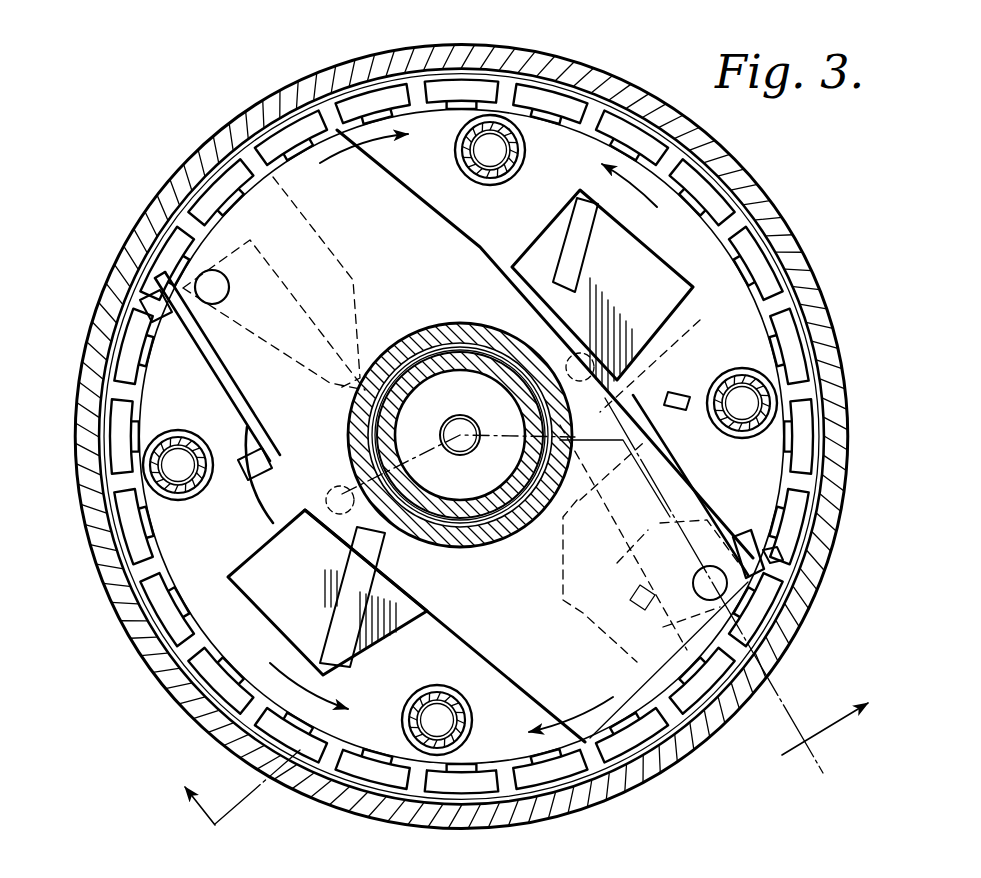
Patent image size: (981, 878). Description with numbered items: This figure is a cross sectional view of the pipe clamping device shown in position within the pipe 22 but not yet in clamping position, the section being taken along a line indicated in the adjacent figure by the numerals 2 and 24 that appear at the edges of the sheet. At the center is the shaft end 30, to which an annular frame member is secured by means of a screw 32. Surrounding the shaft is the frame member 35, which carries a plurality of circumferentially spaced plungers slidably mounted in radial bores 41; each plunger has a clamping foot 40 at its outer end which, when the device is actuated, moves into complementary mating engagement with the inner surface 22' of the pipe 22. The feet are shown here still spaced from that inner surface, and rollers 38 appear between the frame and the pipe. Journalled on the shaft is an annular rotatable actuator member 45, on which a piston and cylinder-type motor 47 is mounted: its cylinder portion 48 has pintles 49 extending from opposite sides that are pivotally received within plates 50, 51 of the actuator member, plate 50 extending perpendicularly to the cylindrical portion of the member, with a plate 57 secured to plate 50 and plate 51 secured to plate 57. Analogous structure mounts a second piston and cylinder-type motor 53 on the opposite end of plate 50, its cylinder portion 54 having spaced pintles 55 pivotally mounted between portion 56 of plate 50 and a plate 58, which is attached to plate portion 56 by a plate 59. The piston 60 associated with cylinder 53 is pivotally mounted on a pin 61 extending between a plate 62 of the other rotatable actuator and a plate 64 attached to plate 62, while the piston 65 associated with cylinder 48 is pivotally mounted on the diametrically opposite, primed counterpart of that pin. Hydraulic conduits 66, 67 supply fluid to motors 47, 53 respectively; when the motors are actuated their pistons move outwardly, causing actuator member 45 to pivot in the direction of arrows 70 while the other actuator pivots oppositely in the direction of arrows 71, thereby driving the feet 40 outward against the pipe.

The section line 2- 2 is at (516, 621).
The pipe 22 is at (461, 436).
The inner surface of pipe 22' is at (425, 437).
The housing part 24 is at (323, 7).
The shaft end 30 is at (492, 395).
The screw 32 is at (467, 444).
The frame member 35 is at (600, 128).
The roller bearing 38 is at (500, 116).
The clamping foot 40 is at (143, 534).
The radial bore 41 is at (232, 7).
The annular rotatable actuator member 45 is at (452, 325).
The piston and cylinder-type motor 47 is at (683, 460).
The cylinder portion 48 is at (795, 508).
The pintle 49 is at (735, 590).
The plate 50 is at (493, 653).
The plate 51 is at (647, 533).
The piston and cylinder-type motor 53 is at (207, 360).
The cylinder portion 54 is at (150, 342).
The pintle 55 is at (213, 286).
The portion of plate 56 is at (373, 173).
The plate 57 is at (560, 604).
The plate 58 is at (248, 347).
The plate 59 is at (345, 258).
The piston 60 is at (263, 492).
The pin 61 is at (603, 313).
The plate 62 is at (675, 273).
The plate 64 is at (588, 266).
The piston 65 is at (693, 327).
The hydraulic conduit 66 is at (785, 553).
The hydraulic conduit 67 is at (158, 318).
The arrows 70 is at (317, 130).
The arrows 71 is at (645, 190).